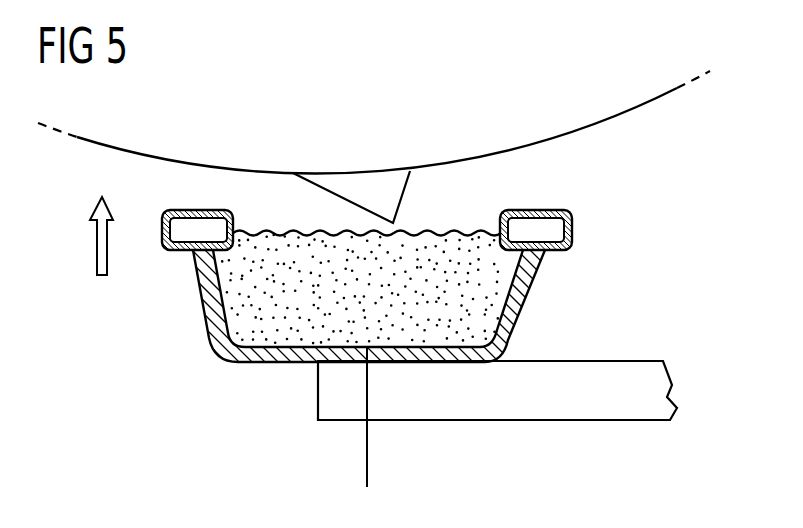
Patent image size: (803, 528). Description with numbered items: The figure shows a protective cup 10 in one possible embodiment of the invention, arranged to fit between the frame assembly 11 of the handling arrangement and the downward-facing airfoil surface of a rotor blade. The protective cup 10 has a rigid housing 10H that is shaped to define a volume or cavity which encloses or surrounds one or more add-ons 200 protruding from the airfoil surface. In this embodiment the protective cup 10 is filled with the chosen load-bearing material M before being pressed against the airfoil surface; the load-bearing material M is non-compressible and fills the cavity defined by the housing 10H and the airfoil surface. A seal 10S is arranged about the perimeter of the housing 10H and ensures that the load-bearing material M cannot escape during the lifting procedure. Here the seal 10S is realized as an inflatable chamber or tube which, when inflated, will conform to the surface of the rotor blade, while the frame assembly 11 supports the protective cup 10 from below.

The add-ons 200 is at (368, 180).
The protective cup 10 is at (392, 317).
The rigid housing 10H is at (518, 295).
The seal 10S is at (173, 250).
The load-bearing material M is at (450, 242).
The frame assembly 11 is at (652, 360).